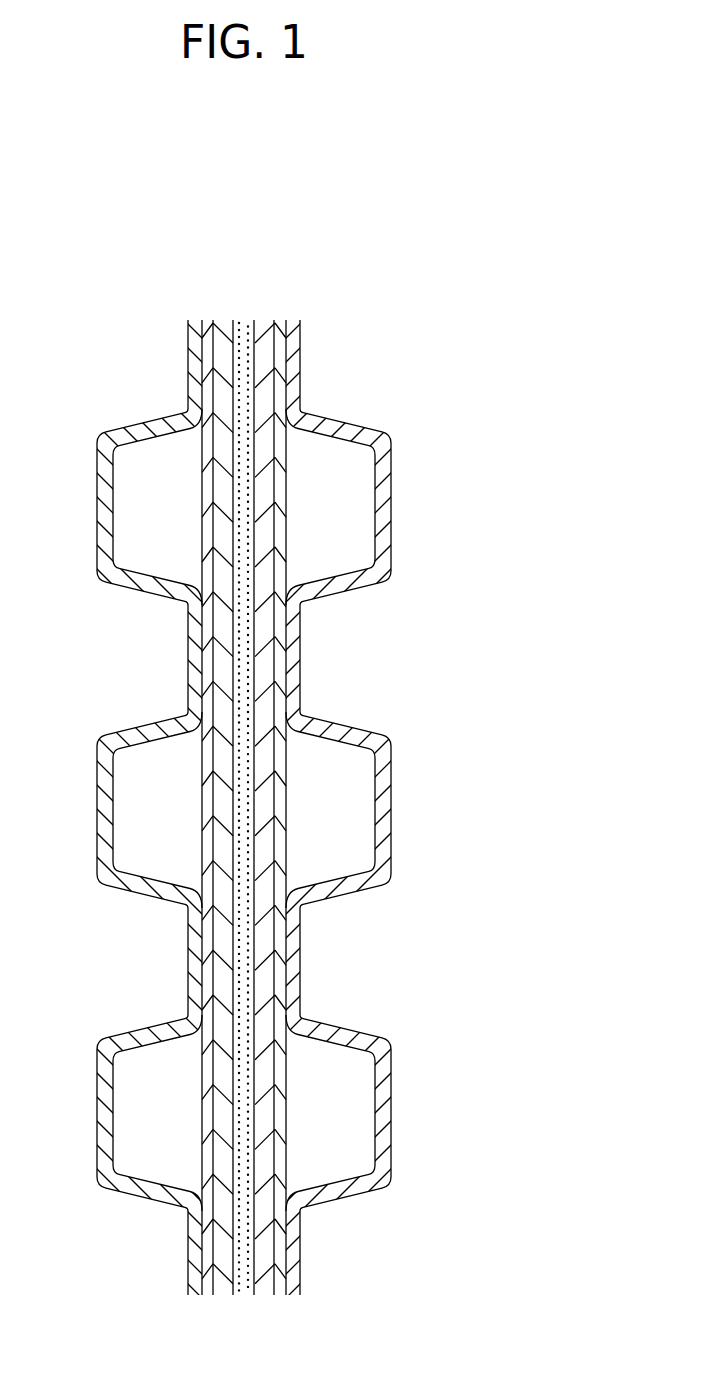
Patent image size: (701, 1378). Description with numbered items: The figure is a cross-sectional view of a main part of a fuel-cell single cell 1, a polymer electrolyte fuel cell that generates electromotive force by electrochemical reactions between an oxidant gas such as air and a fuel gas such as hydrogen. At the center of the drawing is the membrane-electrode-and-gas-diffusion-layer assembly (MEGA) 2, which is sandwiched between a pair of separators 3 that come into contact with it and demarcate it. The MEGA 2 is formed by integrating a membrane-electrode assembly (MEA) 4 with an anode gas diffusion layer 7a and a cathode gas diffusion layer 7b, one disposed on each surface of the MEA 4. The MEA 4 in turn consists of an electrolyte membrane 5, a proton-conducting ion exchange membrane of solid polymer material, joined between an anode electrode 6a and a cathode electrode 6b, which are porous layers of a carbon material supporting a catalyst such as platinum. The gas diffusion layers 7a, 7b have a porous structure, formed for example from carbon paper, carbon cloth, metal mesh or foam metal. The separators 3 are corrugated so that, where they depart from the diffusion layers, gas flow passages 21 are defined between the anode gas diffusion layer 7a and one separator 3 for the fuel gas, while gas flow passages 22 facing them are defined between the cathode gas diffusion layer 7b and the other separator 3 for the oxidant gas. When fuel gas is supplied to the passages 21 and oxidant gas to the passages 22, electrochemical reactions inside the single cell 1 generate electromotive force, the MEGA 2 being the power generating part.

The fuel-cell single cell 1 is at (358, 189).
The membrane-electrode-and-gas-diffusion-layer assembly 2 is at (317, 234).
The separator 3 is at (152, 418).
The membrane-electrode assembly 4 is at (290, 265).
The electrolyte membrane 5 is at (245, 331).
The anode electrode 6a is at (222, 331).
The cathode electrode 6b is at (263, 331).
The anode gas diffusion layer 7a is at (208, 331).
The cathode gas diffusion layer 7b is at (278, 331).
The gas flow passage 21 is at (145, 520).
The gas flow passage 22 is at (315, 520).